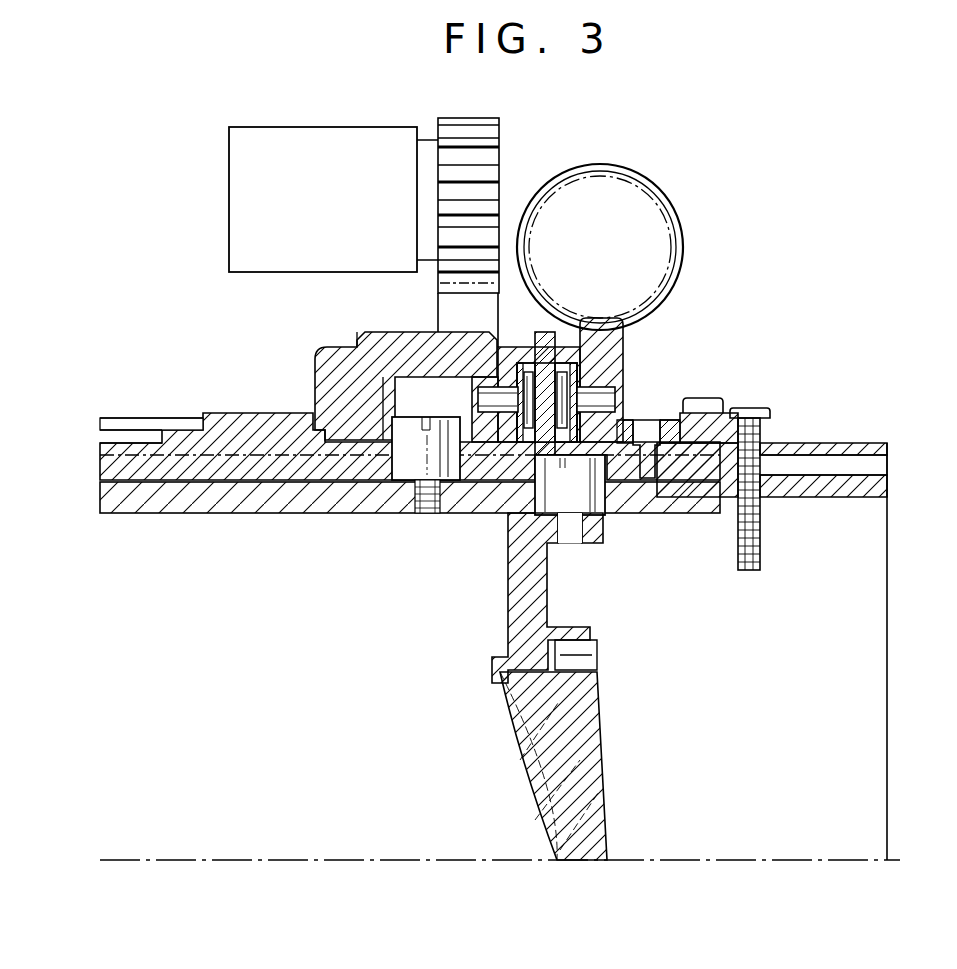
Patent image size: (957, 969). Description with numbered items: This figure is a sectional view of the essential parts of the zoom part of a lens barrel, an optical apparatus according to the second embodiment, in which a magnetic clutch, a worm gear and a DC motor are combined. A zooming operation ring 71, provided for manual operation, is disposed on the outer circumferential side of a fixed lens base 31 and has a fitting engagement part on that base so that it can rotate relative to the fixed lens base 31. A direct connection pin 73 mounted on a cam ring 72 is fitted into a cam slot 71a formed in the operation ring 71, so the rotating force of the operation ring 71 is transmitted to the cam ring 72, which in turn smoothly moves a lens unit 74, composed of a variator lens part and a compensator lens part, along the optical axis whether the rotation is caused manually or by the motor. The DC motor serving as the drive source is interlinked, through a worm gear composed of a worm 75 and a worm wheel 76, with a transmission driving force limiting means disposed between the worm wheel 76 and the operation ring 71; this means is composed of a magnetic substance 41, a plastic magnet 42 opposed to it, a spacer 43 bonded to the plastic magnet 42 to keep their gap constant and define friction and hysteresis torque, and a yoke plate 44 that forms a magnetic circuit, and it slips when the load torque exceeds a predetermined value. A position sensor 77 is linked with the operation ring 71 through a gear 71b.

The fixed lens base 31 is at (410, 406).
The magnetic substance 41 is at (632, 407).
The plastic magnet 42 is at (510, 373).
The spacer 43 is at (627, 396).
The yoke plate 44 is at (537, 459).
The zooming operation ring 71 is at (379, 379).
The cam slot 71a is at (405, 486).
The gear 71b is at (417, 232).
The cam ring 72 is at (410, 538).
The direct connection pin 73 is at (421, 506).
The lens unit 74 is at (534, 686).
The worm 75 is at (601, 210).
The worm wheel 76 is at (647, 377).
The position sensor 77 is at (333, 158).